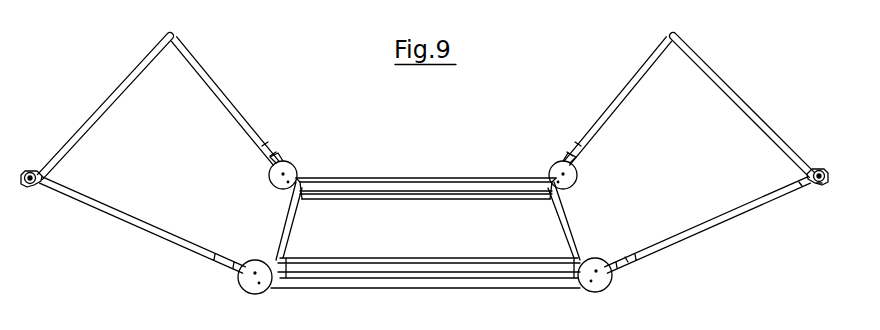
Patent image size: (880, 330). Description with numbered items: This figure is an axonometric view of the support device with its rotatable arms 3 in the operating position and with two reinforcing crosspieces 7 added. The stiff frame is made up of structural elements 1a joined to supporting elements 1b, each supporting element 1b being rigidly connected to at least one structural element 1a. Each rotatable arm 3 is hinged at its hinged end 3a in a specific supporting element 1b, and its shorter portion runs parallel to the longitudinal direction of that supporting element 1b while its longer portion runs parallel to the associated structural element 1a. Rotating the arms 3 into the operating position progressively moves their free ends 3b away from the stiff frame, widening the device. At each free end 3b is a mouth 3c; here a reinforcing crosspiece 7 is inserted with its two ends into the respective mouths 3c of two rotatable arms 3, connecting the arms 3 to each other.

The structural element 1a is at (399, 175).
The supporting element 1b is at (280, 177).
The rotatable arm 3 is at (234, 108).
The hinged end 3a is at (625, 255).
The free end 3b is at (797, 190).
The mouth 3c is at (818, 188).
The reinforcing crosspiece 7 is at (87, 110).